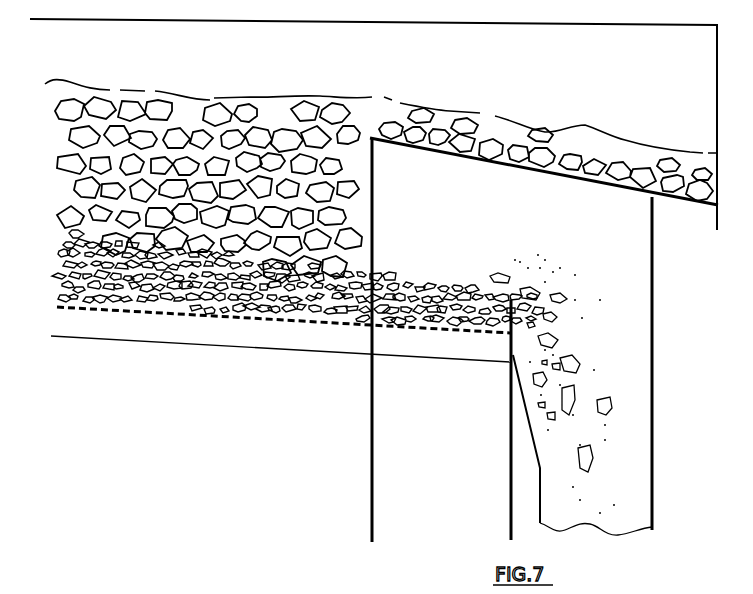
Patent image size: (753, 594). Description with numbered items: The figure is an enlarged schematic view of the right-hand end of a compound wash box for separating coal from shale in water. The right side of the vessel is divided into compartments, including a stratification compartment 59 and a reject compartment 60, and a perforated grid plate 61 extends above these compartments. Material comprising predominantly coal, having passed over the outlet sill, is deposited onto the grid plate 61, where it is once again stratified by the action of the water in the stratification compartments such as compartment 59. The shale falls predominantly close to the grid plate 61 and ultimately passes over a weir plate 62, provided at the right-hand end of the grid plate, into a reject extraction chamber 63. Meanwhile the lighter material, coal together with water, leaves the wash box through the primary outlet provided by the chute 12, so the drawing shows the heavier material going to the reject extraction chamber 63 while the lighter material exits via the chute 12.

The chute 12 is at (701, 206).
The stratification compartment 59 is at (288, 447).
The reject compartment 60 is at (477, 476).
The perforated grid plate 61 is at (268, 322).
The weir plate 62 is at (515, 320).
The reject extraction chamber 63 is at (641, 490).